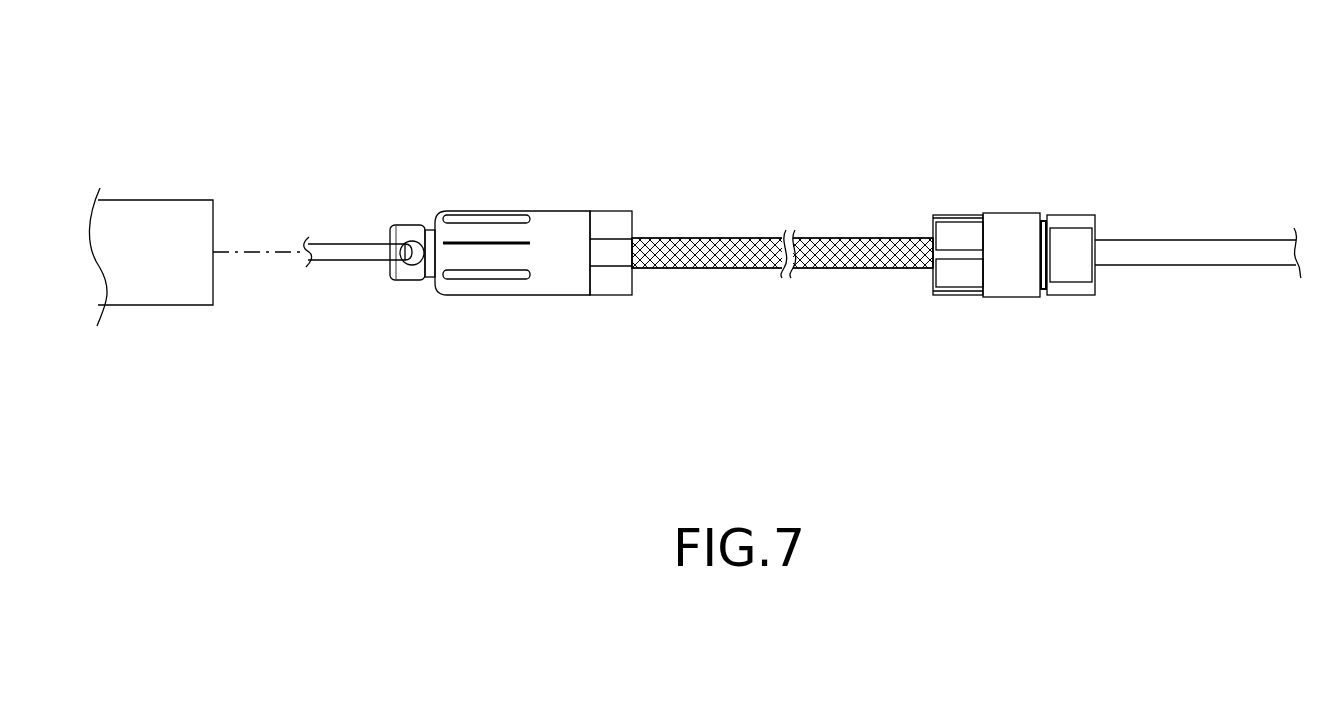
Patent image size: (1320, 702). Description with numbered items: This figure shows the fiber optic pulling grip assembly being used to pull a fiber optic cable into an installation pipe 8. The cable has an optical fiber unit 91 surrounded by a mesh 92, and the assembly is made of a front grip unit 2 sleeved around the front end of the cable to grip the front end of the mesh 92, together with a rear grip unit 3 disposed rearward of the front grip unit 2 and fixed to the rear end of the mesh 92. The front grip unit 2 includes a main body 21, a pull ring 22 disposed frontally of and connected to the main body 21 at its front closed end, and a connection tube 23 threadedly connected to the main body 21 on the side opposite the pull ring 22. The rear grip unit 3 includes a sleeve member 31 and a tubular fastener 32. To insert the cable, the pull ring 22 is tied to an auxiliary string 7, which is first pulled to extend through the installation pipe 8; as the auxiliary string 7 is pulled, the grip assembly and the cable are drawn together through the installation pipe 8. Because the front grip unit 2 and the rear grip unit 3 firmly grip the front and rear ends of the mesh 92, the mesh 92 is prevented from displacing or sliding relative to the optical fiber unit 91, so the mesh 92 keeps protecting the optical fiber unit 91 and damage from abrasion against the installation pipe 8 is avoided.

The installation pipe 8 is at (159, 205).
The auxiliary string 7 is at (338, 262).
The front grip unit 2 is at (503, 176).
The main body 21 is at (495, 218).
The pull ring 22 is at (410, 226).
The connection tube 23 is at (615, 218).
The mesh 92 is at (692, 240).
The rear grip unit 3 is at (1025, 215).
The tubular fastener 32 is at (1006, 220).
The sleeve member 31 is at (1068, 280).
The optical fiber unit 91 is at (1162, 243).